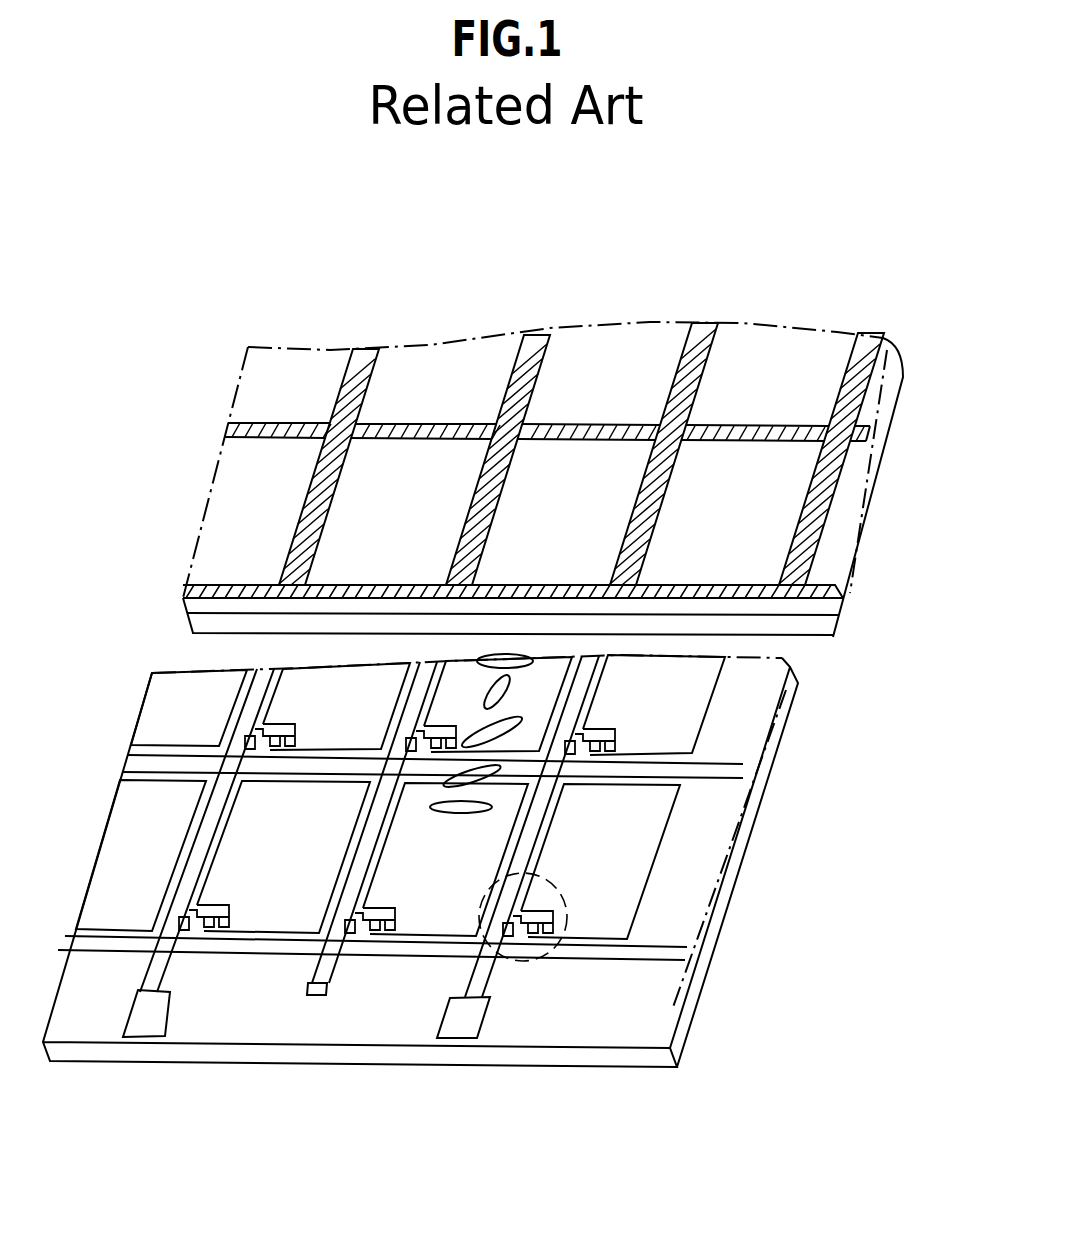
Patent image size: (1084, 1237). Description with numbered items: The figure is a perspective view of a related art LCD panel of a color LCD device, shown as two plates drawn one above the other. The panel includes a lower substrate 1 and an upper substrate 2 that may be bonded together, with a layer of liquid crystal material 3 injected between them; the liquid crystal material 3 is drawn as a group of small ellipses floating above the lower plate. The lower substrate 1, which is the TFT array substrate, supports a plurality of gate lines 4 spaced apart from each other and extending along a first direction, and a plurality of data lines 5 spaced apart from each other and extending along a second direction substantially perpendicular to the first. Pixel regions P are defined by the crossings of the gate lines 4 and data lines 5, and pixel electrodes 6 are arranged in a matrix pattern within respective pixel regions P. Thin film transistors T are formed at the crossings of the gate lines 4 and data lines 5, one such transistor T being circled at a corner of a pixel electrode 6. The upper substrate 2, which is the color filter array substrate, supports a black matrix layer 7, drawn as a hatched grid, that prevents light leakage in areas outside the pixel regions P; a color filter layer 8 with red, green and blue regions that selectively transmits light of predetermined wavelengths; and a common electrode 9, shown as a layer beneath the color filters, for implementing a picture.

The lower substrate 1 is at (630, 1050).
The upper substrate 2 is at (817, 630).
The liquid crystal material 3 is at (517, 722).
The gate lines 4 is at (640, 943).
The data lines 5 is at (470, 981).
The pixel electrodes 6 is at (650, 870).
The black matrix layer 7 is at (865, 433).
The color filter layer 8 is at (795, 347).
The common electrode 9 is at (813, 611).
The pixel regions P is at (693, 820).
The thin film transistors T is at (521, 975).